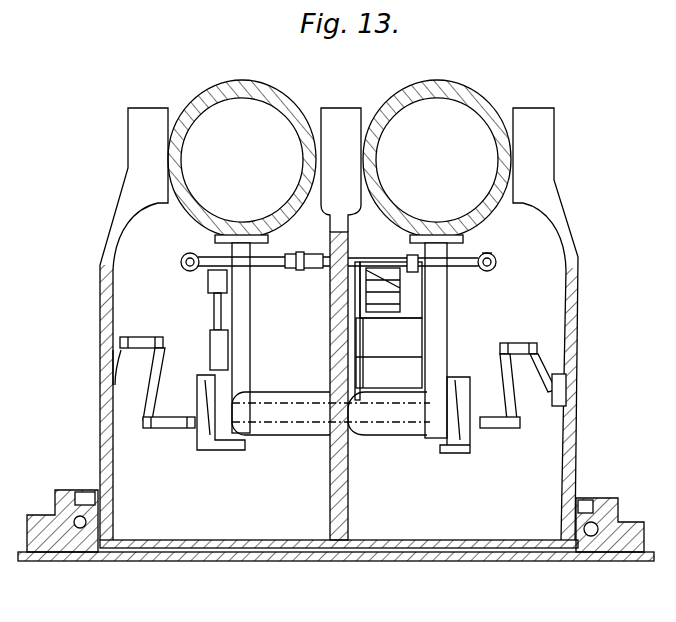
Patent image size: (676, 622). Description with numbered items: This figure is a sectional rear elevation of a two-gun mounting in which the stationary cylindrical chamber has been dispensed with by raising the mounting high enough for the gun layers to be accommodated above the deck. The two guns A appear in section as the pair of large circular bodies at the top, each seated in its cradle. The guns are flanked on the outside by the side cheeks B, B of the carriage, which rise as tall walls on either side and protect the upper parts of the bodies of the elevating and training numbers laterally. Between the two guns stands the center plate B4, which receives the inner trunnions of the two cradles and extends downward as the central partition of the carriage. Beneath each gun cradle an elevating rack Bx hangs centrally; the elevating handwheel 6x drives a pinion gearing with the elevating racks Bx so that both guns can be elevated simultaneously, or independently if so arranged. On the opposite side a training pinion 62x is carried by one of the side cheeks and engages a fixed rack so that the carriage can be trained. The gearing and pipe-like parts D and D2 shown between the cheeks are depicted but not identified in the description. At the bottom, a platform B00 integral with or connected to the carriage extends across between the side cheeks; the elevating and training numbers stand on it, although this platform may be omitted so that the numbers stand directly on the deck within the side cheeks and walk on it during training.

The gun A is at (339, 161).
The side cheeks of the carriage B is at (108, 238).
The center plate B4 is at (341, 324).
The elevating rack Bx is at (245, 342).
The valve gear D is at (410, 284).
The steam pipe D2 is at (480, 268).
The elevating handwheel 6x is at (155, 385).
The training pinion 62x is at (503, 342).
The platform B00 is at (436, 545).